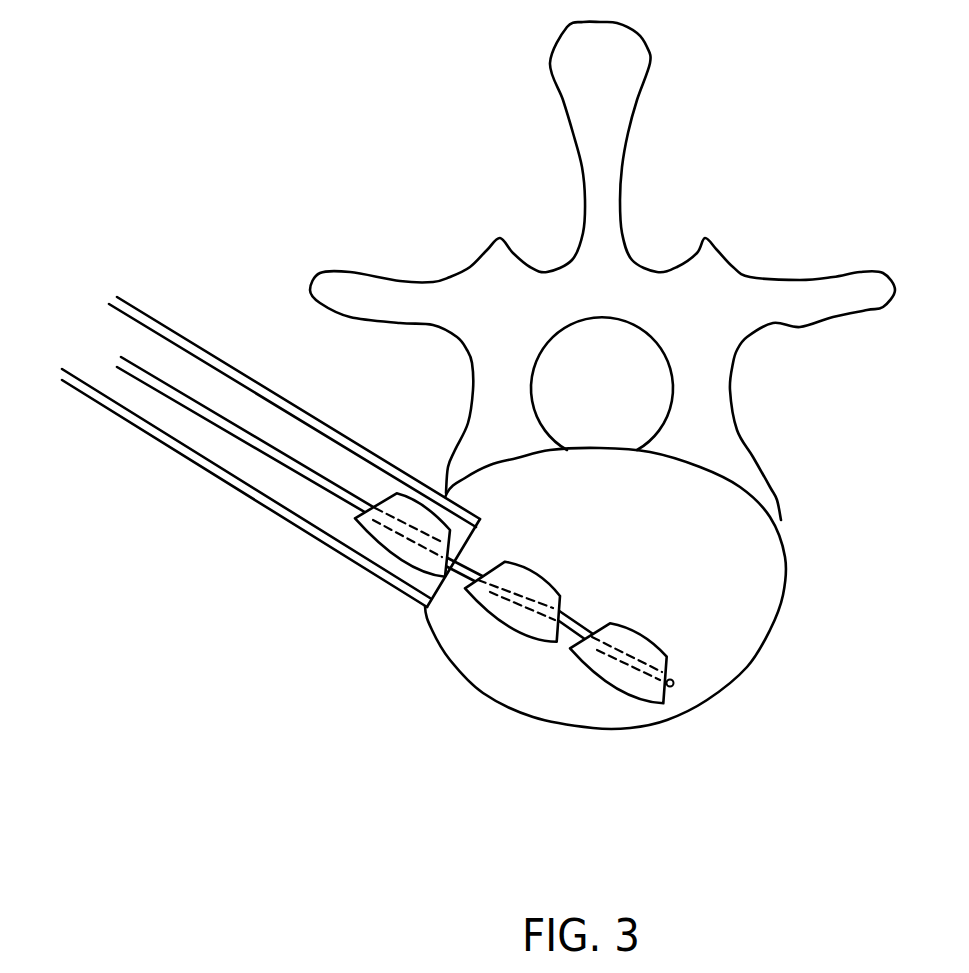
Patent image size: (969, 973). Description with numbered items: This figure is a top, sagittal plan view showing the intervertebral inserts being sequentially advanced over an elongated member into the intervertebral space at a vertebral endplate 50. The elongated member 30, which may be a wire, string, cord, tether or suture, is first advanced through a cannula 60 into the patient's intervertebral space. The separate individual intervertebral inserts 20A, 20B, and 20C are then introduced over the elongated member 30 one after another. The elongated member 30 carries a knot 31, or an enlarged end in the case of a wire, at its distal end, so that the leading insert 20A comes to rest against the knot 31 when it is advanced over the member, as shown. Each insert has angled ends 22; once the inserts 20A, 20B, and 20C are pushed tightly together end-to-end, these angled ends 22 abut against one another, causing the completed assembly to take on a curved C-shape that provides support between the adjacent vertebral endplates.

The vertebral endplate 50 is at (746, 558).
The cannula 60 is at (195, 453).
The elongated member 30 is at (270, 452).
The intervertebral insert 20A is at (636, 685).
The intervertebral insert 20B is at (517, 616).
The intervertebral insert 20C is at (402, 548).
The angled end 22 is at (503, 568).
The knot 31 is at (674, 684).